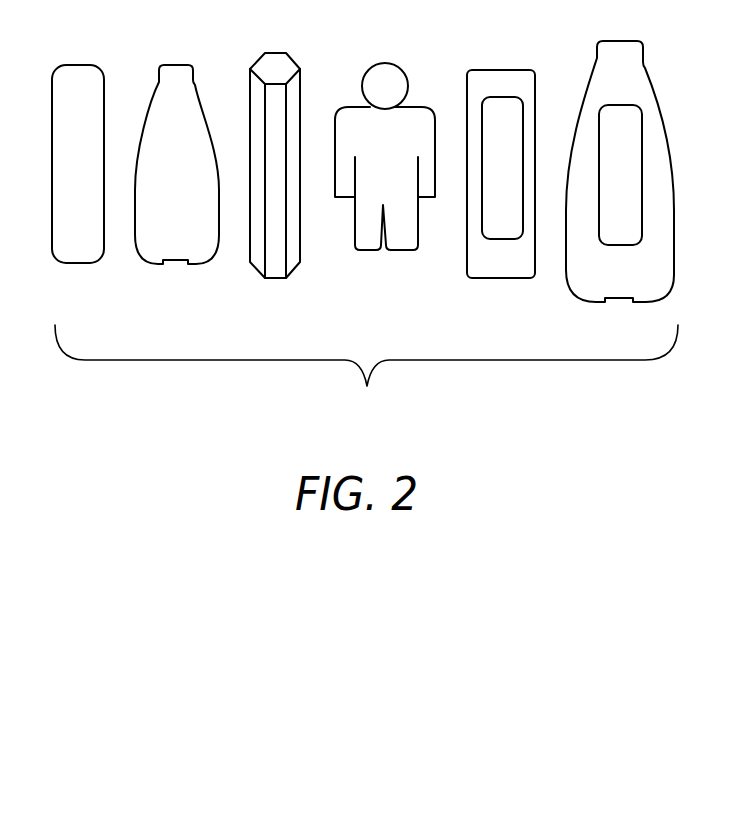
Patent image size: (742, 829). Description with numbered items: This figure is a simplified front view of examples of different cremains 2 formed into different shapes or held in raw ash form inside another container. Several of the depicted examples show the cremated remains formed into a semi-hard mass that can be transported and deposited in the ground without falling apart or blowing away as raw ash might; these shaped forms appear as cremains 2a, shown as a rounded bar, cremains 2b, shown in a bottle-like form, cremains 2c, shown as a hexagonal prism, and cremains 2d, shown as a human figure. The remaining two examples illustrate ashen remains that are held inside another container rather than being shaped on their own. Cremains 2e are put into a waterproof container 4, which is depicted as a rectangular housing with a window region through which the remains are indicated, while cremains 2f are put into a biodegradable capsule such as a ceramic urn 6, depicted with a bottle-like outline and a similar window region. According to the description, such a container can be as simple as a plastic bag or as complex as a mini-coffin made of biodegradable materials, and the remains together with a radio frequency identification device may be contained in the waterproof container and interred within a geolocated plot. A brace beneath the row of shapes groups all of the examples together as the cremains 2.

The cremains 2 is at (366, 372).
The cremains 2a is at (78, 257).
The cremains 2b is at (178, 262).
The cremains 2c is at (272, 274).
The cremains 2d is at (372, 251).
The cremains 2e is at (495, 97).
The cremains 2f is at (644, 170).
The waterproof container 4 is at (493, 273).
The ceramic urn 6 is at (595, 292).